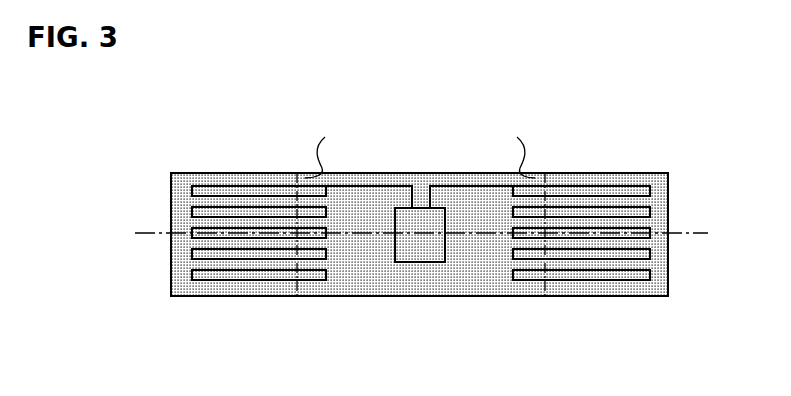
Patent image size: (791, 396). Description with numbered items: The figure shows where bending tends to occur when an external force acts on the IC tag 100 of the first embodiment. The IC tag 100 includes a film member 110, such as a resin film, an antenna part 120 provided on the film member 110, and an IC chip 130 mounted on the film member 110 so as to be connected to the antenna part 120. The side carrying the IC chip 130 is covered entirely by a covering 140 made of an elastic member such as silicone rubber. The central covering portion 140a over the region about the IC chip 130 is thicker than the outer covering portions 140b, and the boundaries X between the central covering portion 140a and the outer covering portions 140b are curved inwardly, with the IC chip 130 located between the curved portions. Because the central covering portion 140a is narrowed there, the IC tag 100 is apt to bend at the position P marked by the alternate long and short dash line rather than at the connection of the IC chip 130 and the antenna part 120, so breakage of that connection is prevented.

The IC tag 100 is at (284, 92).
The film member 110 is at (628, 172).
The antenna part 120 is at (600, 282).
The IC chip 130 is at (425, 223).
The covering 140 is at (240, 205).
The central covering portion 140a is at (422, 268).
The outer covering portion 140b is at (240, 255).